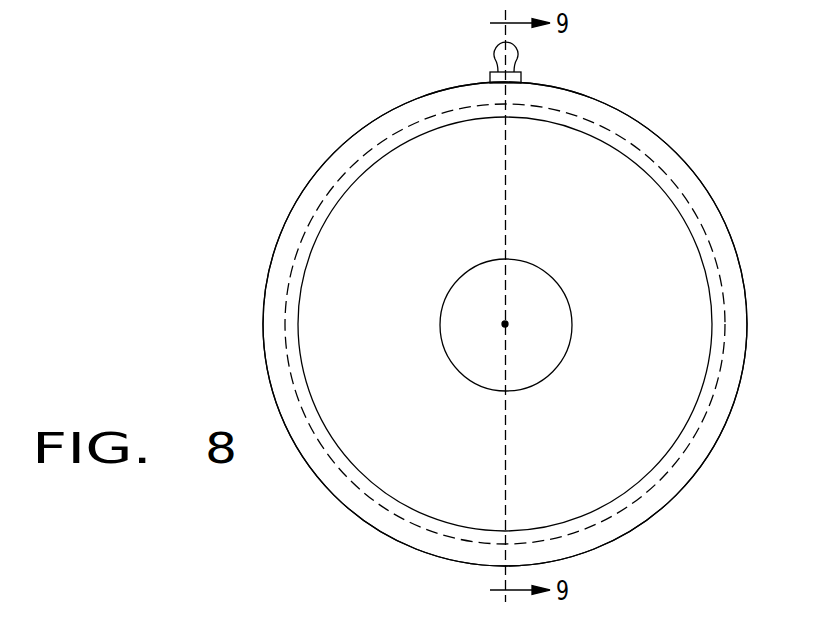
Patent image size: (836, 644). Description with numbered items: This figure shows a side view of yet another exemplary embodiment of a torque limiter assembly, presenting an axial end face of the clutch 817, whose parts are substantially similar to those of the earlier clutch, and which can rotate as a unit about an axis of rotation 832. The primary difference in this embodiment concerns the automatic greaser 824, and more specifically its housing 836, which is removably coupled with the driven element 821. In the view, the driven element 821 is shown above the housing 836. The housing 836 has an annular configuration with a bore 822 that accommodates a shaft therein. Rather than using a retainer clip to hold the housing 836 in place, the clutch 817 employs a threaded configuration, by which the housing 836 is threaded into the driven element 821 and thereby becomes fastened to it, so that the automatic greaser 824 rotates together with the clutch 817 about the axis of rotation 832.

The clutch 817 is at (222, 265).
The driven element 821 is at (345, 508).
The bore 822 is at (548, 341).
The automatic greaser 824 is at (645, 391).
The axis of rotation 832 is at (505, 324).
The housing 836 is at (625, 453).